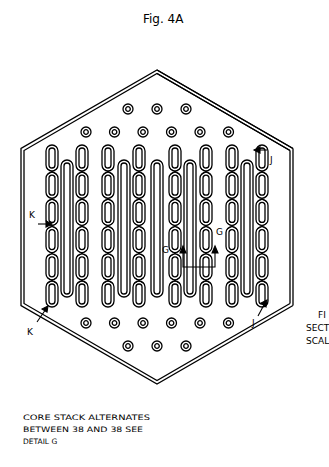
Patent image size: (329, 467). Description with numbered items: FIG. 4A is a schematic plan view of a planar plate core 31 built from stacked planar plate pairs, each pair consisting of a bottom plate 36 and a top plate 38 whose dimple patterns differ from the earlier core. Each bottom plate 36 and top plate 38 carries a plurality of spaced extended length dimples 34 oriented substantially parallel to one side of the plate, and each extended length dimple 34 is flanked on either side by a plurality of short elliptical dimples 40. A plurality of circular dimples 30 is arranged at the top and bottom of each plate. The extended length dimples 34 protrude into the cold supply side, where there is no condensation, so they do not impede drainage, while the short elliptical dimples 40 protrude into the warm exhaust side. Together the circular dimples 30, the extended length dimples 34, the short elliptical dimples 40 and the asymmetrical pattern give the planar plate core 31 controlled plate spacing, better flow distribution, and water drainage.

The circular dimple 30 is at (191, 105).
The planar plate core 31 is at (103, 119).
The extended length dimple 34 is at (269, 181).
The bottom plate 36 is at (294, 238).
The top plate 38 is at (253, 130).
The short elliptical dimple 40 is at (268, 208).